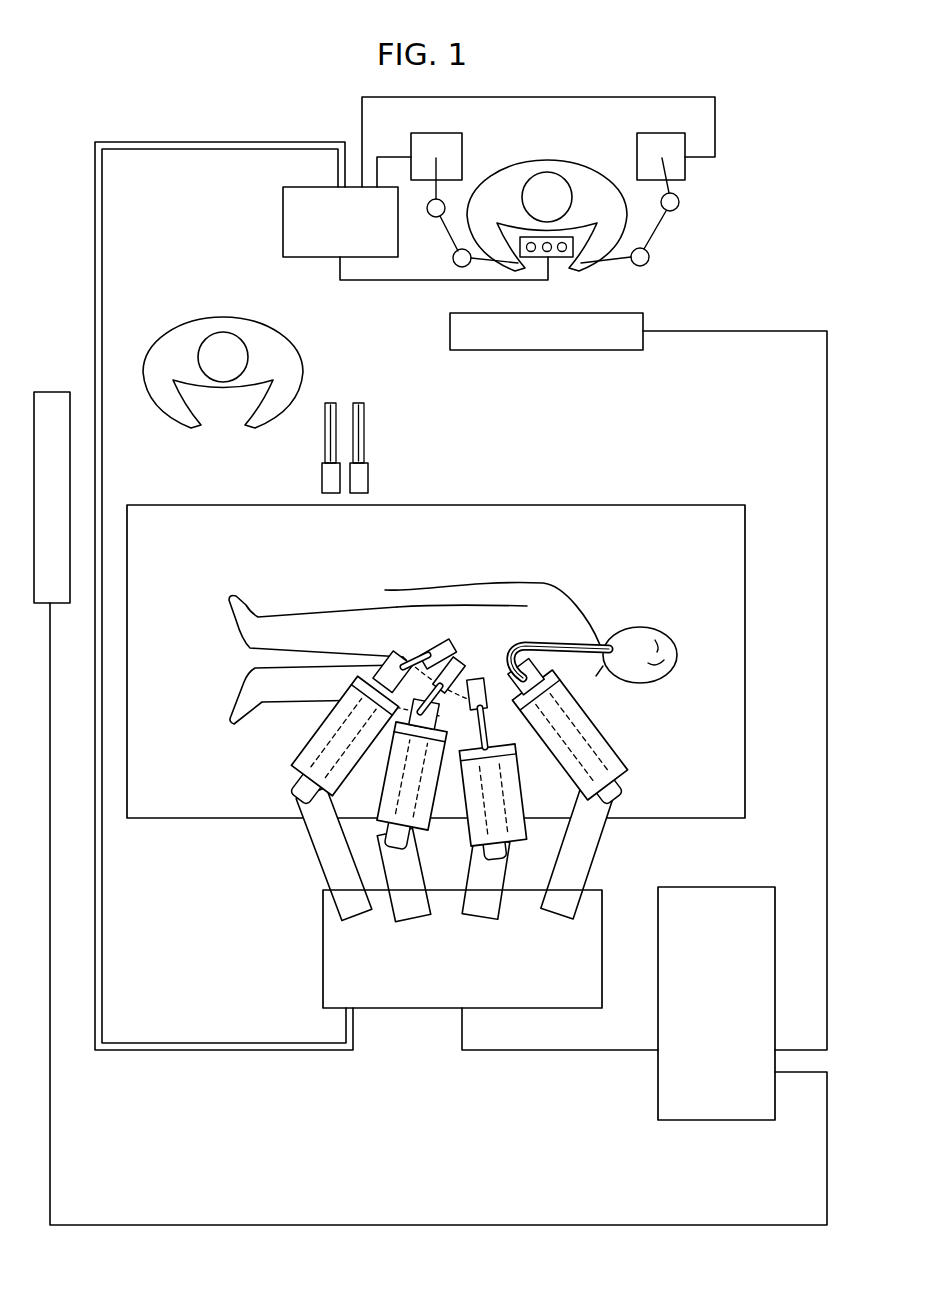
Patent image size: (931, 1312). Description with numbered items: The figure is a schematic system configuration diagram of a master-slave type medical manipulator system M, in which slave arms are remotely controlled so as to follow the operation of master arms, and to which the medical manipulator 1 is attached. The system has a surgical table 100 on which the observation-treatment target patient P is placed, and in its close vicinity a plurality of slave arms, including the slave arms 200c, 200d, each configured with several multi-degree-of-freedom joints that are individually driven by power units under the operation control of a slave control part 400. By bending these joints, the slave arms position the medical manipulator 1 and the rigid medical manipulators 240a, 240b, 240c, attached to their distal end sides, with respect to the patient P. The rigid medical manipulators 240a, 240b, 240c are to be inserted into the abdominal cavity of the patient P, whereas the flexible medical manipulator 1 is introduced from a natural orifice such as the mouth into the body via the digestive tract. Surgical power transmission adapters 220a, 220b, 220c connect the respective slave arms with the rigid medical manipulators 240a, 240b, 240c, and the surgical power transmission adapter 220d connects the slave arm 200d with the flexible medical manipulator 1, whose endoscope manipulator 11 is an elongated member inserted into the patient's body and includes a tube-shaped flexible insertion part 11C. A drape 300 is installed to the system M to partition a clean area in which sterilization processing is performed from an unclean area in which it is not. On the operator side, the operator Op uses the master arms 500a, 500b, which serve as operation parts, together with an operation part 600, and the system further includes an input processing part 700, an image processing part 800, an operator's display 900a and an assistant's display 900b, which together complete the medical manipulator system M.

The medical manipulator 1 is at (567, 640).
The endoscope manipulator 11 is at (561, 602).
The flexible insertion part 11C is at (533, 642).
The surgical table 100 is at (671, 505).
The slave arm 200c is at (512, 788).
The slave arm 200d is at (605, 730).
The surgical power transmission adapter 220a is at (360, 667).
The surgical power transmission adapter 220b is at (322, 731).
The surgical power transmission adapter 220c is at (605, 755).
The surgical power transmission adapter 220d is at (600, 688).
The medical manipulator 240a is at (440, 648).
The medical manipulator 240b is at (458, 663).
The medical manipulator 240c is at (478, 665).
The drape 300 is at (292, 788).
The slave control part 400 is at (323, 949).
The master arm 500a is at (454, 267).
The master arm 500b is at (672, 212).
The operation part 600 is at (557, 258).
The input processing part 700 is at (283, 212).
The image processing part 800 is at (720, 1121).
The operator's display 900a is at (549, 350).
The assistant's display 900b is at (51, 392).
The operator Op is at (545, 162).
The patient P is at (678, 656).
The medical manipulator system M is at (612, 456).